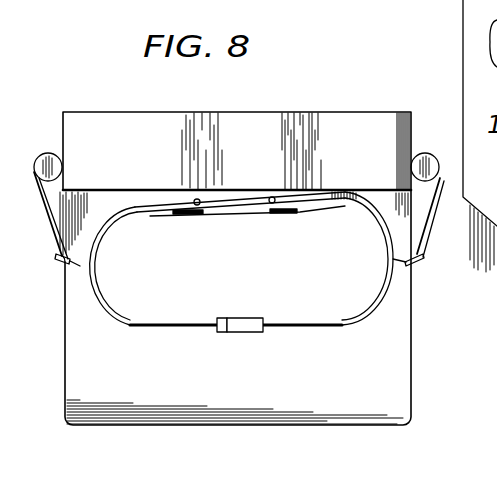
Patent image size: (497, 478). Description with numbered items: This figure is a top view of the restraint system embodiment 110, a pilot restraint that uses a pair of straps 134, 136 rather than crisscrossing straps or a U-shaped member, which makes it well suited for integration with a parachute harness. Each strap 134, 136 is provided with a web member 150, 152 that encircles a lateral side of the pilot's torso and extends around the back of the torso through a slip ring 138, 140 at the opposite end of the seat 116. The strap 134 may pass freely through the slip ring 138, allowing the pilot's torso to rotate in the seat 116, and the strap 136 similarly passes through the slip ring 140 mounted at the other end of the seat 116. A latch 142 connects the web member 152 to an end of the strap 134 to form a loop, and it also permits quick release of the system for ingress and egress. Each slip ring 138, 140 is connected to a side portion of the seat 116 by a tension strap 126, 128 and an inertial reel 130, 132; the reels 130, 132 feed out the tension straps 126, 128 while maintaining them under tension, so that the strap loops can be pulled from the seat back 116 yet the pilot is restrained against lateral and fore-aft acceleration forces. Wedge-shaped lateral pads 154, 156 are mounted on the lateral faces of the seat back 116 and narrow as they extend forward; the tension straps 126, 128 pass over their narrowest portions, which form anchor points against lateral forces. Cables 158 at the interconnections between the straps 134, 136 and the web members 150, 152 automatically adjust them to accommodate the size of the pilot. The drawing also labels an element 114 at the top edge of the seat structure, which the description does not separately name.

The restraint system embodiment 110 is at (81, 92).
The upper housing section 114 is at (164, 106).
The seat 116 is at (322, 112).
The tension strap 126 is at (432, 185).
The tension strap 128 is at (60, 177).
The inertial reel 130 is at (41, 152).
The inertial reel 132 is at (420, 152).
The strap 134 is at (182, 328).
The strap 136 is at (348, 330).
The slip ring 138 is at (75, 263).
The slip ring 140 is at (408, 263).
The latch 142 is at (243, 335).
The web member 150 is at (80, 268).
The web member 152 is at (390, 262).
The lateral pad 154 is at (365, 207).
The lateral pad 156 is at (113, 196).
The cable 158 is at (255, 200).